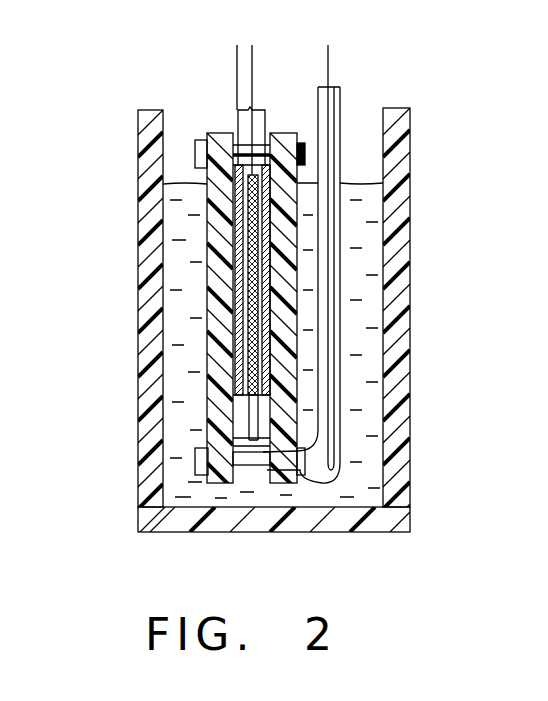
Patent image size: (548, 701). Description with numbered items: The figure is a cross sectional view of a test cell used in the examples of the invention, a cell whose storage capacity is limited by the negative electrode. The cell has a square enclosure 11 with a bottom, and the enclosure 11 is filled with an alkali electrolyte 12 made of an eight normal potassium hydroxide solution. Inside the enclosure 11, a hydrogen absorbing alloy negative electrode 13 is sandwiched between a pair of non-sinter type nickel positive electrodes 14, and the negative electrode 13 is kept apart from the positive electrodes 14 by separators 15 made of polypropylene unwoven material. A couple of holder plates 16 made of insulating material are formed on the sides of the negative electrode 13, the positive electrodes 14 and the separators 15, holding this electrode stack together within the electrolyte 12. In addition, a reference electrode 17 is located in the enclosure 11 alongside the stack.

The square enclosure 11 is at (398, 341).
The alkali electrolyte 12 is at (378, 302).
The hydrogen absorbing alloy negative electrode 13 is at (248, 224).
The non-sinter type nickel positive electrodes 14 is at (237, 262).
The separators 15 is at (250, 405).
The holder plates 16 is at (236, 440).
The reference electrode 17 is at (330, 200).